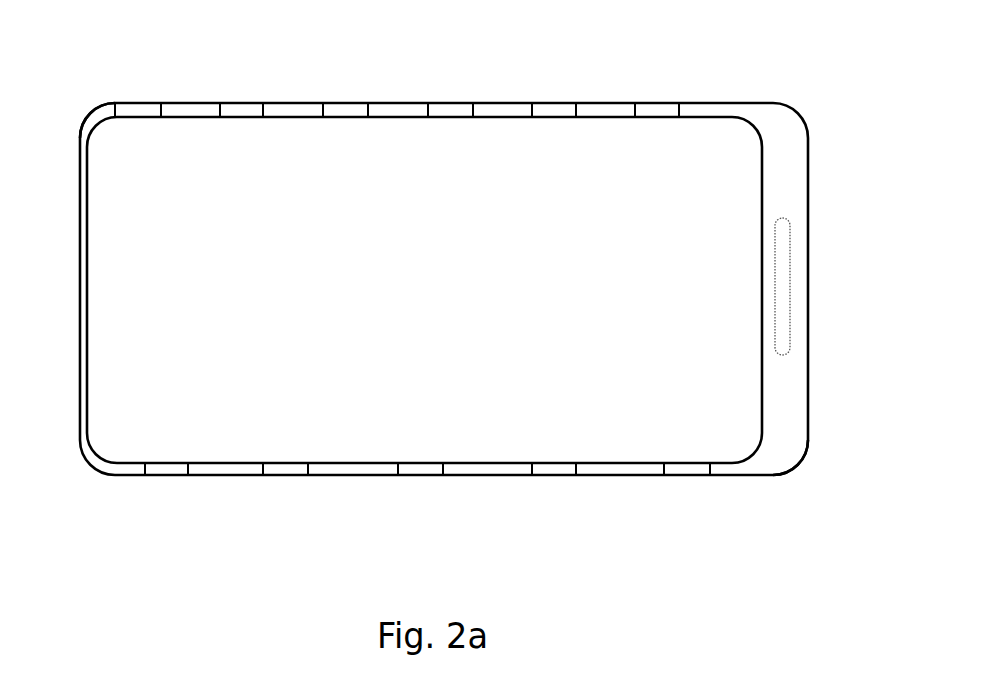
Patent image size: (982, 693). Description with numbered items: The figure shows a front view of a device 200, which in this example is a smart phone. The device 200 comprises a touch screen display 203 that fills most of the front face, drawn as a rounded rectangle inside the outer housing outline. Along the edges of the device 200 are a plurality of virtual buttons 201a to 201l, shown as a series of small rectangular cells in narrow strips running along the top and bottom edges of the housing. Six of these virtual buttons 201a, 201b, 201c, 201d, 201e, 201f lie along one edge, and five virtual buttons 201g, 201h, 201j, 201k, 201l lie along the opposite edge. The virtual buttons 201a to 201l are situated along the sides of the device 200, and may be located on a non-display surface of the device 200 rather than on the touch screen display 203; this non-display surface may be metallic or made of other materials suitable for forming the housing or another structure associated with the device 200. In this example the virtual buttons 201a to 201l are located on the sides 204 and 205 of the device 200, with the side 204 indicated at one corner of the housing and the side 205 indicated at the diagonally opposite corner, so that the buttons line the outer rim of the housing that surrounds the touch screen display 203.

The device 200 is at (808, 317).
The virtual button 201a is at (137, 102).
The virtual button 201b is at (237, 102).
The virtual button 201c is at (346, 102).
The virtual button 201d is at (445, 102).
The virtual button 201e is at (552, 102).
The virtual button 201f is at (655, 102).
The virtual button 201g is at (168, 477).
The virtual button 201h is at (282, 477).
The virtual button 201j is at (423, 477).
The virtual button 201k is at (552, 477).
The virtual button 201l is at (692, 475).
The touch screen display 203 is at (748, 353).
The side of the device 204 is at (87, 112).
The side of the device 205 is at (790, 470).